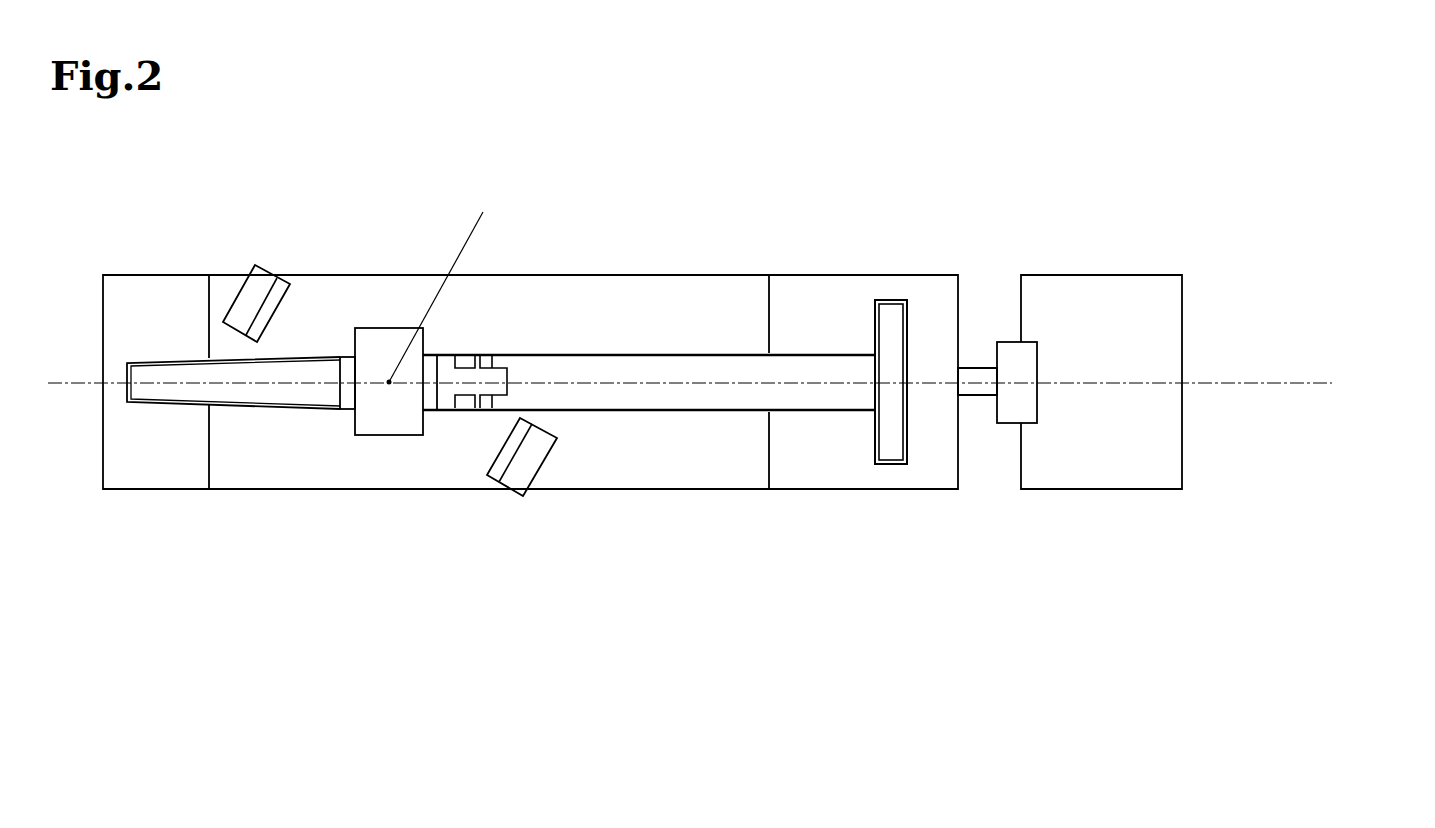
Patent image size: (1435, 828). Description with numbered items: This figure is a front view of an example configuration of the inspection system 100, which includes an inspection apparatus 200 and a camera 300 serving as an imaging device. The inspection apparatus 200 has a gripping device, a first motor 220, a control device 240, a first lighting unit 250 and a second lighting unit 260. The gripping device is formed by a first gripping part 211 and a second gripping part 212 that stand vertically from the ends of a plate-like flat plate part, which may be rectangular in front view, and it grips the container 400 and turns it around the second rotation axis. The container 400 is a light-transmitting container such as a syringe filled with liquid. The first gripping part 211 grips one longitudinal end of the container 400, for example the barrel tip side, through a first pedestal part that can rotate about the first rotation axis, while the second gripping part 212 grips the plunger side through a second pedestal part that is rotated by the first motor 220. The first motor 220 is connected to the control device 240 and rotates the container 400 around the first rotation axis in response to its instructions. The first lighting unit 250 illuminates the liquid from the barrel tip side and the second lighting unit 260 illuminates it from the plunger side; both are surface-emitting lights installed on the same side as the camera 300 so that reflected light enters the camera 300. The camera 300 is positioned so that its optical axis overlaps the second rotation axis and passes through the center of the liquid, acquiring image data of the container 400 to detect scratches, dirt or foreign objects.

The inspection system 100 is at (733, 431).
The inspection apparatus 200 is at (1019, 200).
The first gripping part 211 is at (145, 277).
The second gripping part 212 is at (862, 277).
The control device 240 is at (1143, 277).
The first motor 220 is at (1024, 424).
The first lighting unit 250 is at (269, 266).
The second lighting unit 260 is at (541, 470).
The camera 300 is at (393, 437).
The container 400 is at (673, 412).